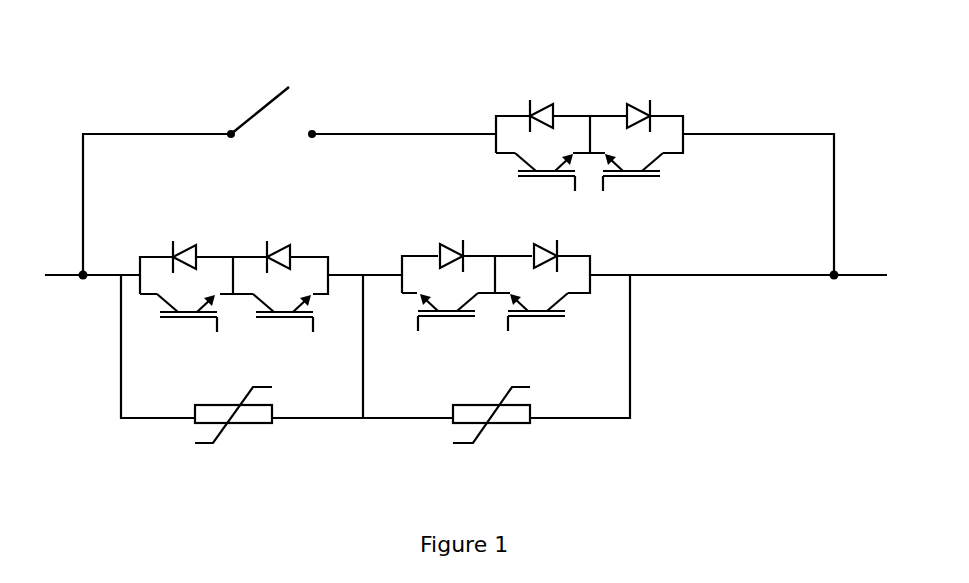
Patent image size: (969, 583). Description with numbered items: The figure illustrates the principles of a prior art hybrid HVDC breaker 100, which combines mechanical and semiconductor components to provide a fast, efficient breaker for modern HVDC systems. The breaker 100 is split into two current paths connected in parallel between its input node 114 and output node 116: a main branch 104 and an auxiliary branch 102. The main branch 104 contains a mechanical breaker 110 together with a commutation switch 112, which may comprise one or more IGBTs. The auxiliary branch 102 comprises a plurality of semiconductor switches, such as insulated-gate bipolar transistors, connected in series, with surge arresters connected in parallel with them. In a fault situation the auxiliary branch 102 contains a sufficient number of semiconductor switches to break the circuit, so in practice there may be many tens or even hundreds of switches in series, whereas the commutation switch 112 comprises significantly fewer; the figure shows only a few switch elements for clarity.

The hybrid breaker 100 is at (417, 71).
The auxiliary branch 102 is at (422, 362).
The main branch 104 is at (458, 154).
The mechanical breaker 110 is at (273, 102).
The commutation switch 112 is at (668, 106).
The input node 114 is at (81, 273).
The output node 116 is at (836, 273).